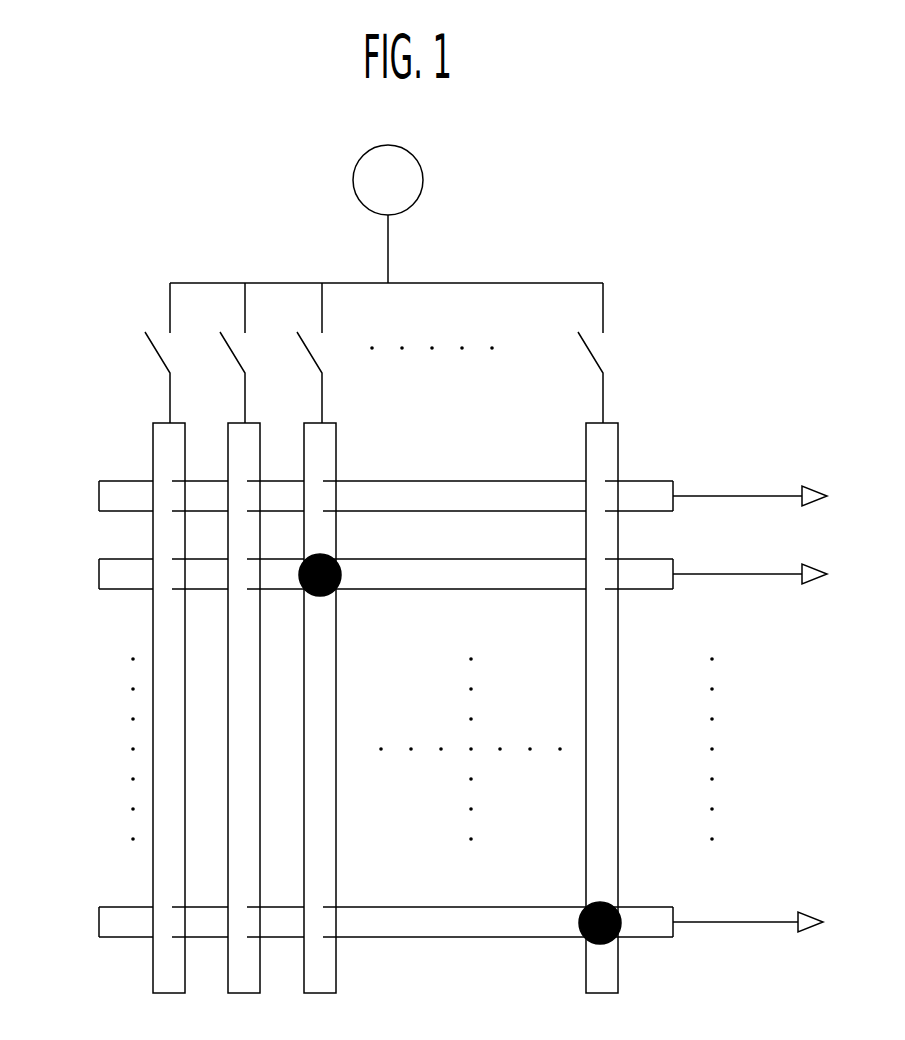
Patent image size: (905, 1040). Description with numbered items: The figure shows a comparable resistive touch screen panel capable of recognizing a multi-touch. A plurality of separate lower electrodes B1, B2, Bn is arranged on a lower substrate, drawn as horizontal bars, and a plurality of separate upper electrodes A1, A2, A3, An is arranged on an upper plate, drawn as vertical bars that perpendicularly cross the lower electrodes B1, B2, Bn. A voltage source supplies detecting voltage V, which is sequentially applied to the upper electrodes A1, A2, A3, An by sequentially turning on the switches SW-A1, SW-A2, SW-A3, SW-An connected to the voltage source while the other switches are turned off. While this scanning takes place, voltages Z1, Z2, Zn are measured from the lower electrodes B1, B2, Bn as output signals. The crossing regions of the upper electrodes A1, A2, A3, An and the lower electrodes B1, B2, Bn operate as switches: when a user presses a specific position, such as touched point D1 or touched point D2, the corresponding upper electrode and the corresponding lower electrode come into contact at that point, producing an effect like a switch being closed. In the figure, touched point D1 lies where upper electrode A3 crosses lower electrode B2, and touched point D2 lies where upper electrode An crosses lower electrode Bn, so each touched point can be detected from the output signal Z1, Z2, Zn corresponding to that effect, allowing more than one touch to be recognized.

The detecting voltage V is at (388, 214).
The switch SW-A1 is at (137, 353).
The switch SW-A2 is at (211, 353).
The switch SW-A3 is at (287, 353).
The switch SW-An is at (568, 353).
The upper electrode A1 is at (160, 672).
The upper electrode A2 is at (234, 672).
The upper electrode A3 is at (309, 672).
The upper electrode An is at (590, 672).
The lower electrode B1 is at (366, 496).
The lower electrode B2 is at (366, 574).
The lower electrode Bn is at (363, 922).
The voltage Z1 is at (750, 485).
The voltage Z2 is at (750, 563).
The voltage Zn is at (748, 910).
The touched point D1 is at (323, 553).
The touched point D2 is at (580, 927).